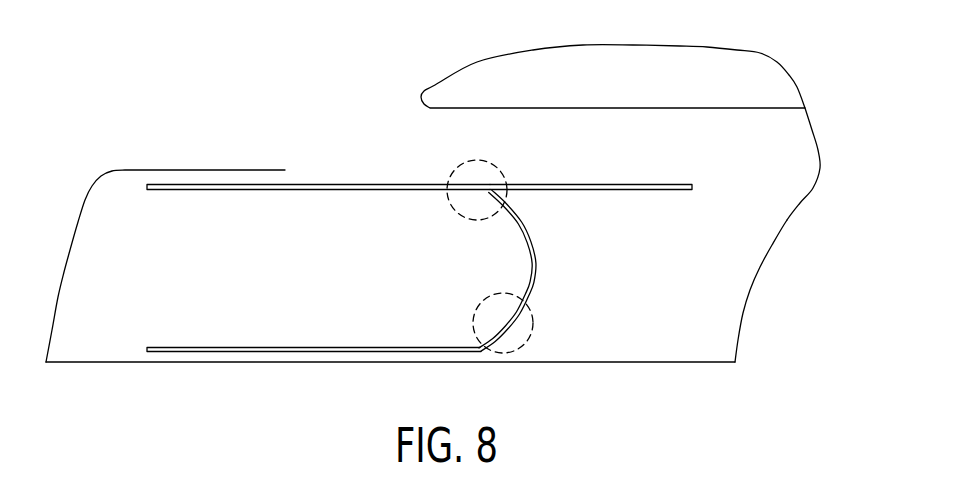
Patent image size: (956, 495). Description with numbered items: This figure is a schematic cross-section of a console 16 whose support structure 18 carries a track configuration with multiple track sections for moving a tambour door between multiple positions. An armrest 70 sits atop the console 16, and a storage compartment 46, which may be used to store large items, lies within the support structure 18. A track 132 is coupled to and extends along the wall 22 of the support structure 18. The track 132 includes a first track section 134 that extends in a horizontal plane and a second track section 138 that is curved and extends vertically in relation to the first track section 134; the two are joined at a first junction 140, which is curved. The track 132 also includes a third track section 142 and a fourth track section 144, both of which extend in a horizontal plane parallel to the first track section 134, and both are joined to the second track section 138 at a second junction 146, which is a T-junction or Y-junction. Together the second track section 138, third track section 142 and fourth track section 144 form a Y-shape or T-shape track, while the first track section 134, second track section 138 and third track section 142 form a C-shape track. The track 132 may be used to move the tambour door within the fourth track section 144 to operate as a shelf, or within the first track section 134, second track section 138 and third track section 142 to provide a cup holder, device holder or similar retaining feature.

The console 16 is at (56, 107).
The support structure 18 is at (808, 115).
The wall 22 is at (722, 353).
The storage compartment 46 is at (630, 323).
The armrest 70 is at (642, 55).
The track 132 is at (328, 135).
The first track section 134 is at (350, 349).
The second track section 138 is at (536, 268).
The first junction 140 is at (508, 353).
The third track section 142 is at (420, 185).
The fourth track section 144 is at (630, 184).
The second junction 146 is at (473, 160).